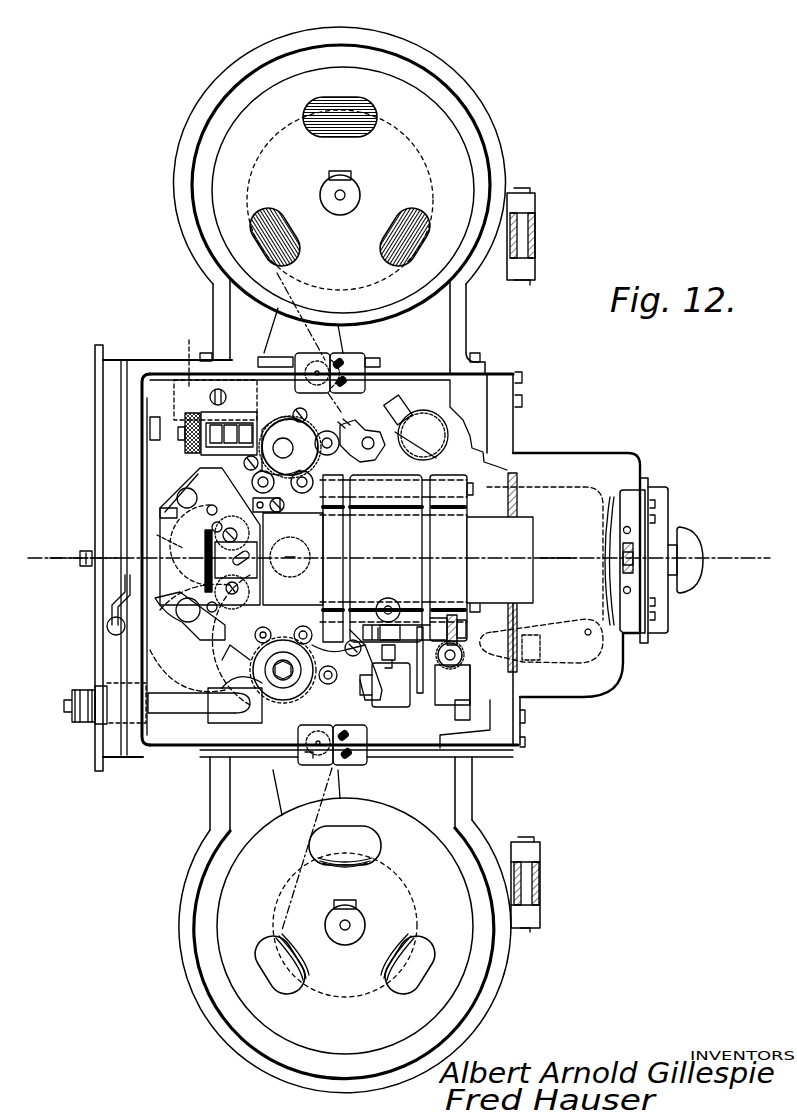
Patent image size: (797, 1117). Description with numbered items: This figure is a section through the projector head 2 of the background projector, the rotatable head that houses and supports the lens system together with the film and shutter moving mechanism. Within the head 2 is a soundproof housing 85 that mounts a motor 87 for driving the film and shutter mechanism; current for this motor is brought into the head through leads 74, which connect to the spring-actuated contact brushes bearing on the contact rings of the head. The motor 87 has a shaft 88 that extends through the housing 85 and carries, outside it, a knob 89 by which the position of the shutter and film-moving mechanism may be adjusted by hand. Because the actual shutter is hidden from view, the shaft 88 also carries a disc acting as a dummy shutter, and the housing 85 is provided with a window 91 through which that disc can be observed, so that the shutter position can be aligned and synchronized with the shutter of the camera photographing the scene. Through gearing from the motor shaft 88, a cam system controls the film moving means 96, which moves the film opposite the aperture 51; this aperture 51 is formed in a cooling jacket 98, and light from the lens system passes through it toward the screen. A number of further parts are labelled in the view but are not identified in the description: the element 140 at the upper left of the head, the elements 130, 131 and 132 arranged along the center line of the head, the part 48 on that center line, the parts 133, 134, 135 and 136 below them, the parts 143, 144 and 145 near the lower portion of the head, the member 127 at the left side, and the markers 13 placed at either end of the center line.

The projector head 2 is at (509, 135).
The footage counter 140 is at (228, 350).
The soundproof housing 85 is at (418, 366).
The film moving means 96 is at (215, 572).
The aperture 51 is at (193, 552).
The cooling jacket 98 is at (200, 640).
The lens mount 132 is at (405, 541).
The focusing ring 131 is at (450, 476).
The lens barrel 130 is at (522, 531).
The section line 13 is at (39, 550).
The optical axis 48 is at (564, 554).
The motor 87 is at (557, 486).
The window 91 is at (623, 568).
The motor shaft 88 is at (678, 545).
The knob 89 is at (696, 580).
The spring 127 is at (112, 605).
The leads 74 is at (82, 719).
The roller 133 is at (385, 598).
The pin 134 is at (406, 624).
The worm 135 is at (460, 612).
The gear 136 is at (462, 661).
The housing block 145 is at (455, 692).
The bracket 143 is at (420, 705).
The guide block 144 is at (390, 700).